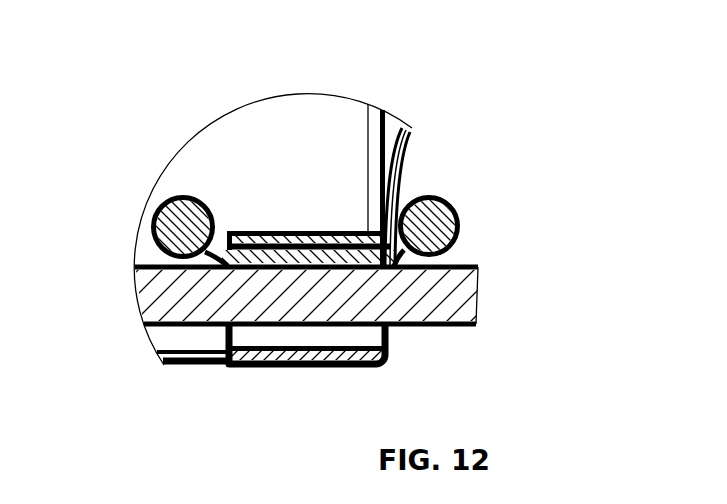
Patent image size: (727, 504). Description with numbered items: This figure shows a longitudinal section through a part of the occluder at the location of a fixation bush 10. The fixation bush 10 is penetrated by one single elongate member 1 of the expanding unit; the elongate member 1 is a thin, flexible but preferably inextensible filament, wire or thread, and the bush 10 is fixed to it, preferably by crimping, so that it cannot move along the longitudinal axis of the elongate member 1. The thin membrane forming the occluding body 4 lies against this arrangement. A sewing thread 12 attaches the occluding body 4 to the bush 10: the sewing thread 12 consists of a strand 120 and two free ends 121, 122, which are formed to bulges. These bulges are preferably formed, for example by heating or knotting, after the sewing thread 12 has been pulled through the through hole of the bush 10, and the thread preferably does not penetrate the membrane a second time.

The elongate member 1 is at (475, 288).
The occluding body 4 is at (417, 133).
The fixation bush 10 is at (333, 368).
The sewing thread 12 is at (228, 181).
The strand 120 is at (400, 265).
The free end 121 is at (152, 222).
The free end 122 is at (450, 205).